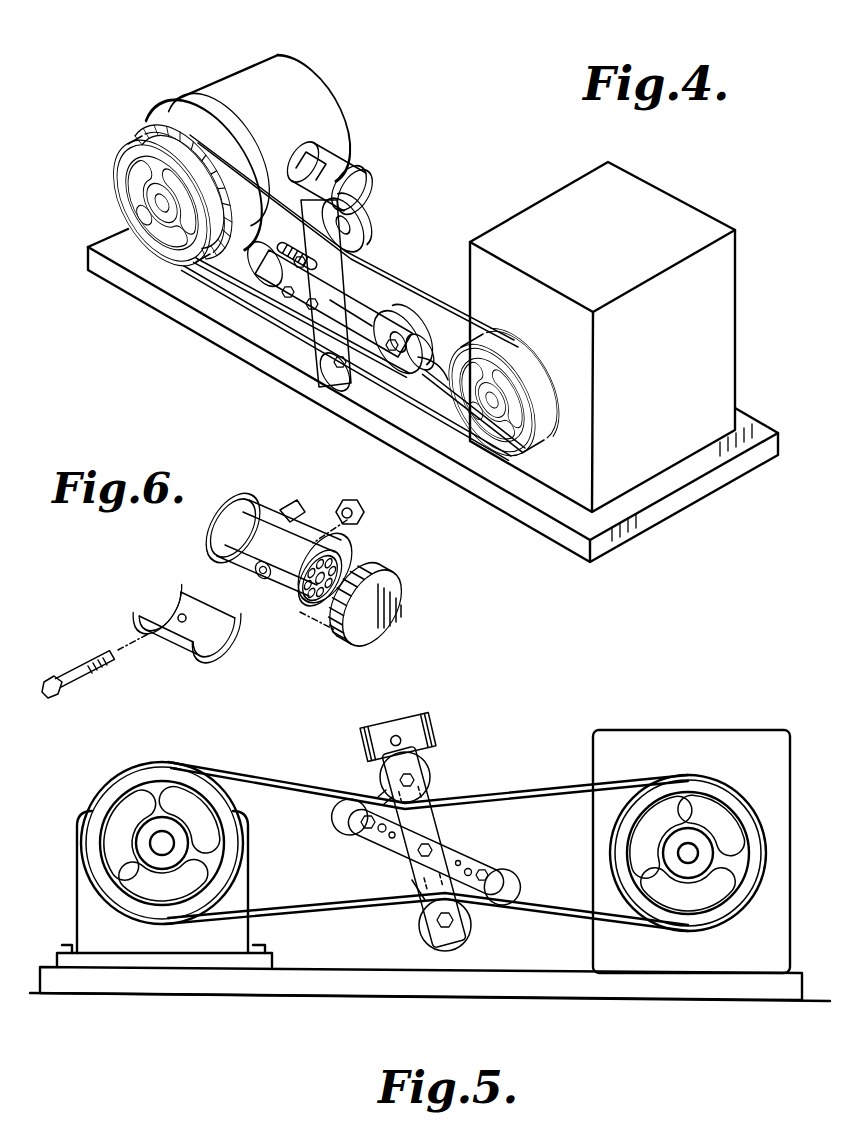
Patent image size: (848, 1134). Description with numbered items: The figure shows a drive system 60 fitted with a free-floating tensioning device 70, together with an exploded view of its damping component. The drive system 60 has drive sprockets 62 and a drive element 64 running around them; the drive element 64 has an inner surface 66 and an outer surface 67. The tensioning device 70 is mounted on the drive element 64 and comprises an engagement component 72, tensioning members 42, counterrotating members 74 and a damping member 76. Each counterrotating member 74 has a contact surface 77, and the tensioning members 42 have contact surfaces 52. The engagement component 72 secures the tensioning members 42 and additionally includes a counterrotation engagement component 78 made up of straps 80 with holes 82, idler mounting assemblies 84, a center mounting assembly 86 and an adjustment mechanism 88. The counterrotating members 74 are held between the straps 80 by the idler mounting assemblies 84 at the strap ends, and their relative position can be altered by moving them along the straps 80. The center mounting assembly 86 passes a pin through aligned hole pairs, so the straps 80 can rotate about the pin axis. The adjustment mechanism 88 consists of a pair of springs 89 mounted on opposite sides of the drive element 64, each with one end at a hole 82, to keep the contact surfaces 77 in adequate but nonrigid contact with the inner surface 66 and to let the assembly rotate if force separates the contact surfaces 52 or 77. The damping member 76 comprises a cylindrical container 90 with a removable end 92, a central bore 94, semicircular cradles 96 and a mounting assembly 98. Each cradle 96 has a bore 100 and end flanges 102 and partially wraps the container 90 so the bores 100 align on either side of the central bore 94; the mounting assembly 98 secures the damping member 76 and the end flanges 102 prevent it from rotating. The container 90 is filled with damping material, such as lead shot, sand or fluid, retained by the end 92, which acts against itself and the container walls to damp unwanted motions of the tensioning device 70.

In FIG. 4, the tensioning members 42 is at (350, 222).
In FIG. 5, the tensioning members 42 is at (430, 773).
In FIG. 4, the contact surfaces 52 is at (345, 392).
In FIG. 4, the drive system 60 is at (190, 72).
In FIG. 5, the drive system 60 is at (633, 720).
In FIG. 4, the drive sprockets 62 is at (125, 157).
In FIG. 5, the drive sprockets 62 is at (103, 807).
In FIG. 4, the drive element 64 is at (185, 108).
In FIG. 5, the drive element 64 is at (293, 793).
In FIG. 4, the inner surface 66 is at (187, 277).
In FIG. 5, the inner surface 66 is at (290, 903).
In FIG. 4, the outer surface 67 is at (273, 210).
In FIG. 5, the outer surface 67 is at (260, 780).
In FIG. 4, the tensioning device 70 is at (380, 165).
In FIG. 5, the tensioning device 70 is at (453, 740).
In FIG. 4, the engagement component 72 is at (383, 230).
In FIG. 5, the engagement component 72 is at (428, 923).
In FIG. 4, the counterrotating members 74 is at (430, 340).
In FIG. 5, the counterrotating members 74 is at (360, 850).
In FIG. 4, the damping member 76 is at (338, 163).
In FIG. 6, the damping member 76 is at (212, 504).
In FIG. 5, the damping member 76 is at (396, 714).
In FIG. 4, the contact surface 77 is at (440, 395).
In FIG. 4, the counterrotation engagement component 78 is at (273, 313).
In FIG. 5, the counterrotation engagement component 78 is at (415, 868).
In FIG. 4, the straps 80 is at (300, 367).
In FIG. 5, the straps 80 is at (463, 863).
In FIG. 4, the holes 82 is at (375, 322).
In FIG. 5, the holes 82 is at (418, 897).
In FIG. 4, the idler mounting assemblies 84 is at (395, 400).
In FIG. 5, the idler mounting assemblies 84 is at (503, 857).
In FIG. 4, the center mounting assembly 86 is at (283, 330).
In FIG. 5, the center mounting assembly 86 is at (430, 847).
In FIG. 4, the adjustment mechanism 88 is at (330, 172).
In FIG. 4, the springs 89 is at (213, 267).
In FIG. 5, the springs 89 is at (380, 798).
In FIG. 6, the cylindrical container 90 is at (240, 535).
In FIG. 6, the removable end 92 is at (397, 610).
In FIG. 6, the central bore 94 is at (263, 572).
In FIG. 6, the cradles 96 is at (177, 573).
In FIG. 6, the mounting assembly 98 is at (130, 667).
In FIG. 6, the bore 100 is at (182, 622).
In FIG. 6, the end flanges 102 is at (150, 593).